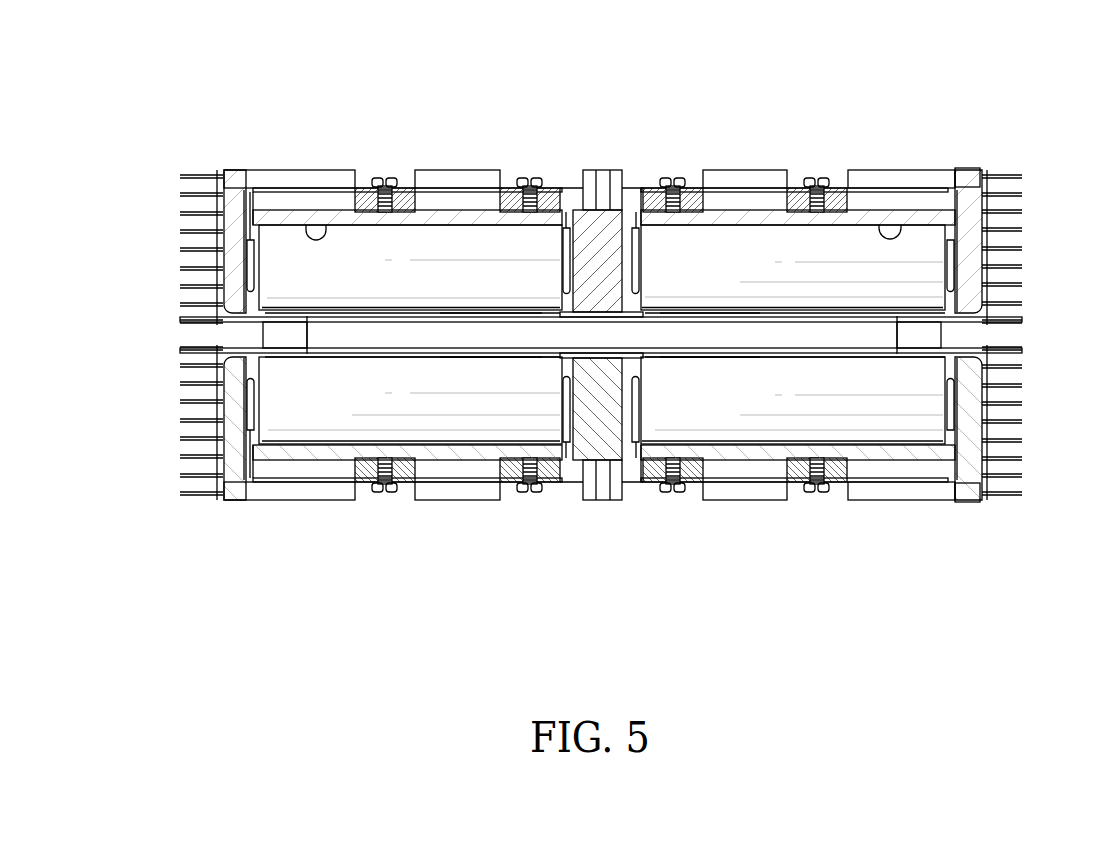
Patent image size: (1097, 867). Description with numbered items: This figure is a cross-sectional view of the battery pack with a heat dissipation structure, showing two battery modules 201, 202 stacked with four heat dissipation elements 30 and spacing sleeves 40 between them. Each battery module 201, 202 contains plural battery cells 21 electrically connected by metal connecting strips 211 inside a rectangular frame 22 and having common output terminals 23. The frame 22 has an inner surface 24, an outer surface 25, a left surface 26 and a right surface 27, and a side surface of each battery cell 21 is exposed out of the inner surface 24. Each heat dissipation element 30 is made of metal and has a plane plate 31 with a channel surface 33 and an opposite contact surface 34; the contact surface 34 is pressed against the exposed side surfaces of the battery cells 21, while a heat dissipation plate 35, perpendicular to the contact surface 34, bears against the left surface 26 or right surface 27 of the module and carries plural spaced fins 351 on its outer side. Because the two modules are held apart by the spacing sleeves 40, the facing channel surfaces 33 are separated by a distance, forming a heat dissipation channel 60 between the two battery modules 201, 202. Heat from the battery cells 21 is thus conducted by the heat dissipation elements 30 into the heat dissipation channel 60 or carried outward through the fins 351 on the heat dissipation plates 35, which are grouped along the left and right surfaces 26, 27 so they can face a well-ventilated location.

The battery cell 21 is at (306, 230).
The metal connecting strip 211 is at (262, 192).
The rectangular frame 22 is at (238, 192).
The common output terminal 23 is at (400, 188).
The inner surface 24 is at (326, 230).
The outer surface 25 is at (290, 212).
The left surface 26 is at (1018, 200).
The right surface 27 is at (222, 242).
The heat dissipation element 30 is at (240, 318).
The plane plate 31 is at (418, 317).
The channel surface 33 is at (520, 345).
The contact surface 34 is at (448, 313).
The heat dissipation plate 35 is at (972, 218).
The fin 351 is at (215, 236).
The spacing sleeve 40 is at (265, 335).
The heat dissipation channel 60 is at (343, 337).
The battery module 201 is at (432, 545).
The battery module 202 is at (499, 130).